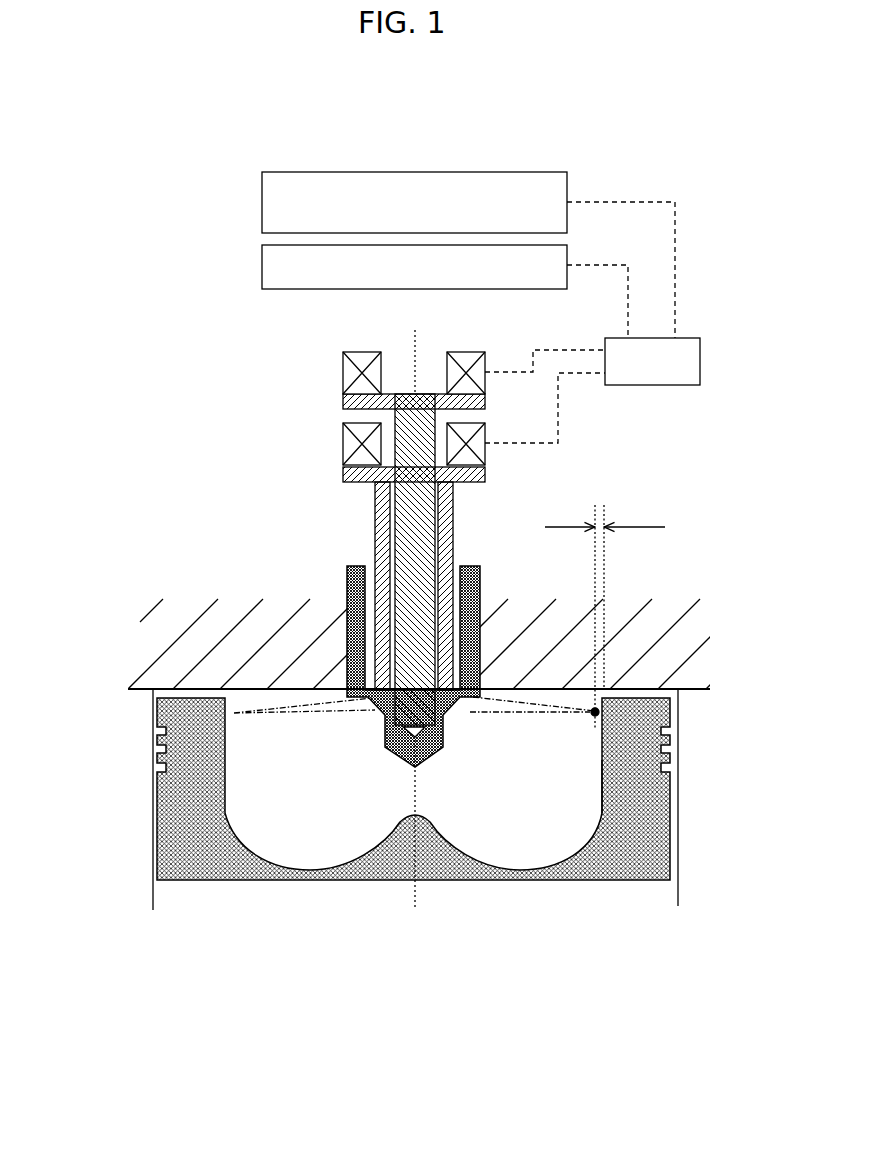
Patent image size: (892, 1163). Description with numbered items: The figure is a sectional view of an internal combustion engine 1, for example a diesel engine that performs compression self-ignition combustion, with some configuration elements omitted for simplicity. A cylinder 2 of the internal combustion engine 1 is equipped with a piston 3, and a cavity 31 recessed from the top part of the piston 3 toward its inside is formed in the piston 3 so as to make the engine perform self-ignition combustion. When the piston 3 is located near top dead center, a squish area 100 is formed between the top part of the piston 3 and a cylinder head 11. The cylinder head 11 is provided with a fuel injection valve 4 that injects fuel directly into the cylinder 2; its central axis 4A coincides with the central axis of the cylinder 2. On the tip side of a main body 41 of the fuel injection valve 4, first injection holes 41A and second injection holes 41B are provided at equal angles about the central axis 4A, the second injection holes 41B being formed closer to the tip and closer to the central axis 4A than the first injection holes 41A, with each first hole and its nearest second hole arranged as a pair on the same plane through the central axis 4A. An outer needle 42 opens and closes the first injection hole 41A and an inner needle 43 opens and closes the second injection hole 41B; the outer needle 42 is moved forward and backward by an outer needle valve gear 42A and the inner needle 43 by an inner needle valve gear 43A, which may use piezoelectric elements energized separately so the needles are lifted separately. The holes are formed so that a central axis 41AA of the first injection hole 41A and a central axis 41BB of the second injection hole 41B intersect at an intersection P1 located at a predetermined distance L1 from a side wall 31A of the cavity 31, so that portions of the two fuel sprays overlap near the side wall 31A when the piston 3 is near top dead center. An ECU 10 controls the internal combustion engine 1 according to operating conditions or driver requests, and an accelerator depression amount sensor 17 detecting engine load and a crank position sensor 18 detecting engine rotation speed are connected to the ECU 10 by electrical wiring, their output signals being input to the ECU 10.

The internal combustion engine 1 is at (198, 550).
The cylinder 2 is at (153, 893).
The piston 3 is at (413, 836).
The fuel injection valve 4 is at (407, 566).
The central axis 4A is at (420, 345).
The ECU 10 is at (652, 385).
The cylinder head 11 is at (675, 647).
The accelerator depression amount sensor 17 is at (262, 185).
The crank position sensor 18 is at (262, 258).
The cavity 31 is at (522, 835).
The side wall 31A is at (603, 752).
The main body 41 is at (347, 585).
The first injection hole 41A is at (490, 714).
The central axis of the first injection hole 41AA is at (487, 698).
The second injection hole 41B is at (460, 714).
The central axis of the second injection hole 41BB is at (592, 727).
The outer needle 42 is at (375, 525).
The outer needle valve gear 42A is at (343, 440).
The inner needle 43 is at (343, 400).
The inner needle valve gear 43A is at (343, 365).
The squish area 100 is at (632, 690).
The predetermined distance L1 is at (605, 609).
The intersection P1 is at (595, 716).